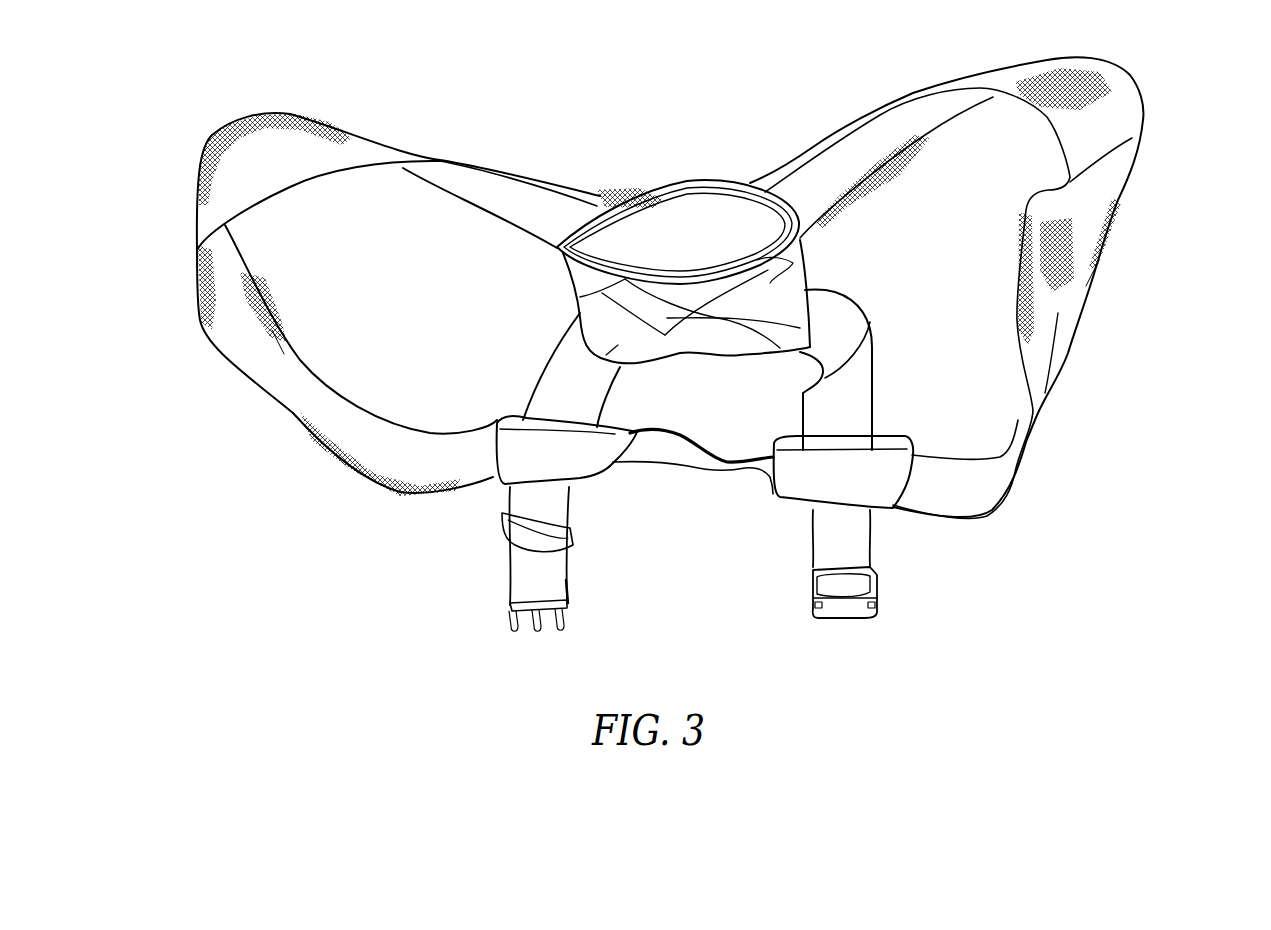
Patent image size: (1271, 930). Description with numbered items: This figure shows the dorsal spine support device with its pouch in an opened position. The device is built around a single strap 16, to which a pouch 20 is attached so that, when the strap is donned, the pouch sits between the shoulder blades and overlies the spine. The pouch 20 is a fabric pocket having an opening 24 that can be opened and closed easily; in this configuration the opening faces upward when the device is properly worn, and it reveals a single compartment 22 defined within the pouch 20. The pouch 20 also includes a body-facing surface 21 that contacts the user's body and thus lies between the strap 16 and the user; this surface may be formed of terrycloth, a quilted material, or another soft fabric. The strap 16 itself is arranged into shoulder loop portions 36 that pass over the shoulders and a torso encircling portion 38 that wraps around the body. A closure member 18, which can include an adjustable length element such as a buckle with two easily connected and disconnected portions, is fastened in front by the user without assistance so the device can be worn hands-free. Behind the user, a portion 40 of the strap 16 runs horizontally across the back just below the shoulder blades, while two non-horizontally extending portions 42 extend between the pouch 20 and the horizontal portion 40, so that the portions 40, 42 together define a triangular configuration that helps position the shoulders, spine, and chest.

The strap 16 is at (247, 160).
The closure member 18 is at (510, 630).
The pouch 20 is at (713, 330).
The body-facing surface 21 is at (610, 340).
The compartment 22 is at (710, 227).
The opening 24 is at (643, 185).
The shoulder loop portions 36 is at (1125, 281).
The torso encircling portion 38 is at (487, 563).
The horizontally extending portion 40 is at (737, 477).
The non-horizontally extending portions 42 is at (515, 352).